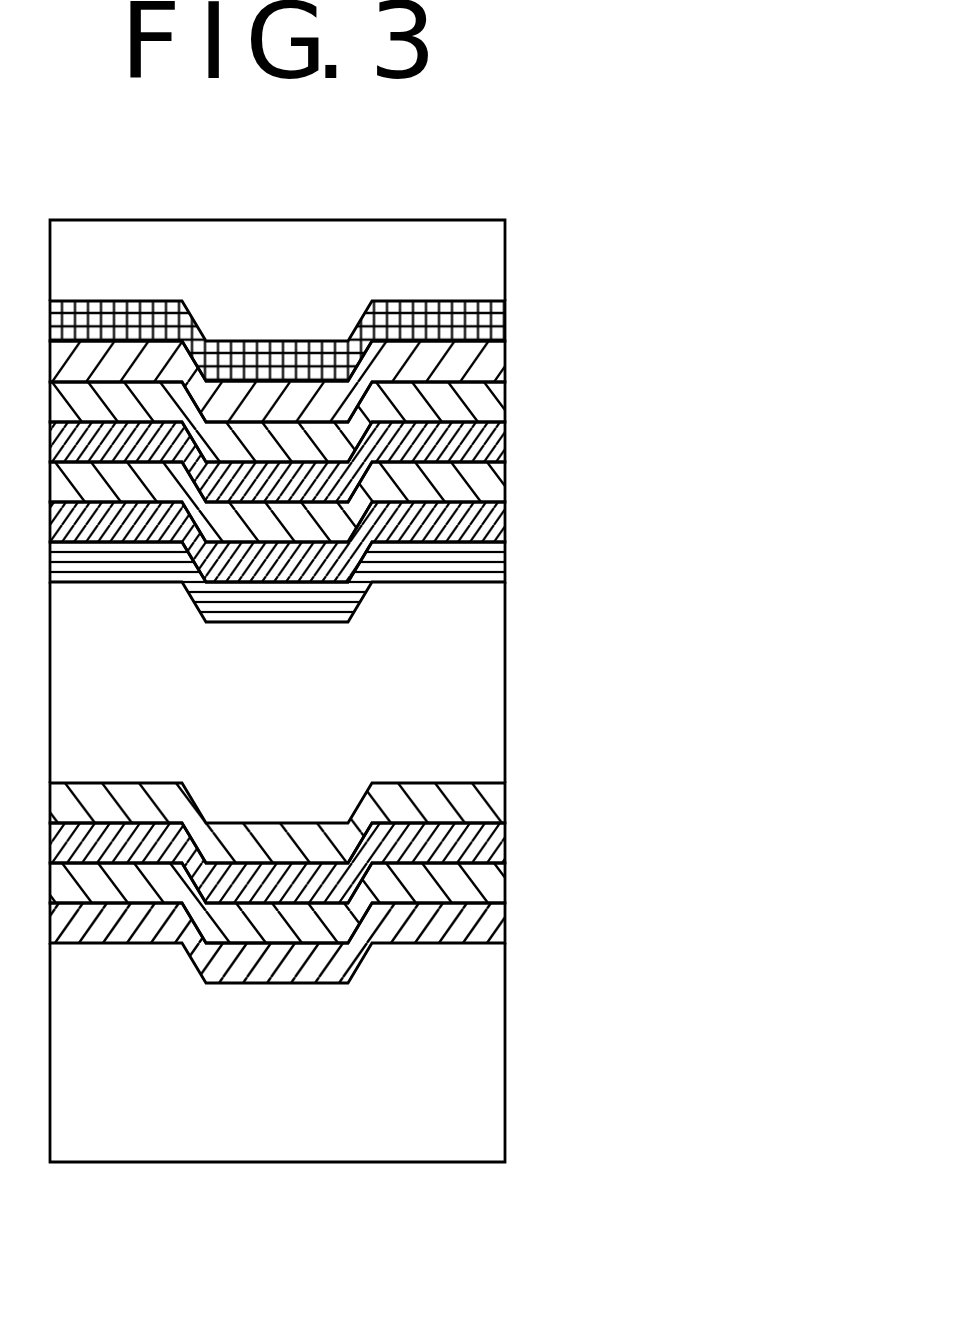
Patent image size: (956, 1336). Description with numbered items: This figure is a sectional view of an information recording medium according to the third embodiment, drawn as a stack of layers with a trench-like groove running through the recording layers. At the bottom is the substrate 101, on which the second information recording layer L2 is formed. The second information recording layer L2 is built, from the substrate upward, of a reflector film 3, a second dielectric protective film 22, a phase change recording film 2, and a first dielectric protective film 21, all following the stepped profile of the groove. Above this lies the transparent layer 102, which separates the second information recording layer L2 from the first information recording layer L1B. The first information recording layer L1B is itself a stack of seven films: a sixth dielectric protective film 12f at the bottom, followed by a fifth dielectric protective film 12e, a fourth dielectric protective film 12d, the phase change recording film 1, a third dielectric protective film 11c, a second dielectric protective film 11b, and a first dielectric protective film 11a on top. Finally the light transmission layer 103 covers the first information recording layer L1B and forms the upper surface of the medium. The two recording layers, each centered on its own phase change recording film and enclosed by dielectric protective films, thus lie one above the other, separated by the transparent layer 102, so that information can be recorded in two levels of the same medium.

The light transmission layer 103 is at (497, 237).
The first dielectric protective film 11a is at (505, 312).
The second dielectric protective film 11b is at (505, 355).
The third dielectric protective film 11c is at (505, 400).
The phase change recording film 1 is at (505, 440).
The fourth dielectric protective film 12d is at (505, 480).
The fifth dielectric protective film 12e is at (505, 522).
The sixth dielectric protective film 12f is at (353, 596).
The first information recording layer L1B is at (421, 441).
The transparent layer 102 is at (500, 690).
The first dielectric protective film 21 is at (505, 800).
The phase change recording film 2 is at (505, 843).
The second dielectric protective film 22 is at (505, 880).
The reflector film 3 is at (348, 943).
The second information recording layer L2 is at (407, 863).
The substrate 101 is at (500, 1080).